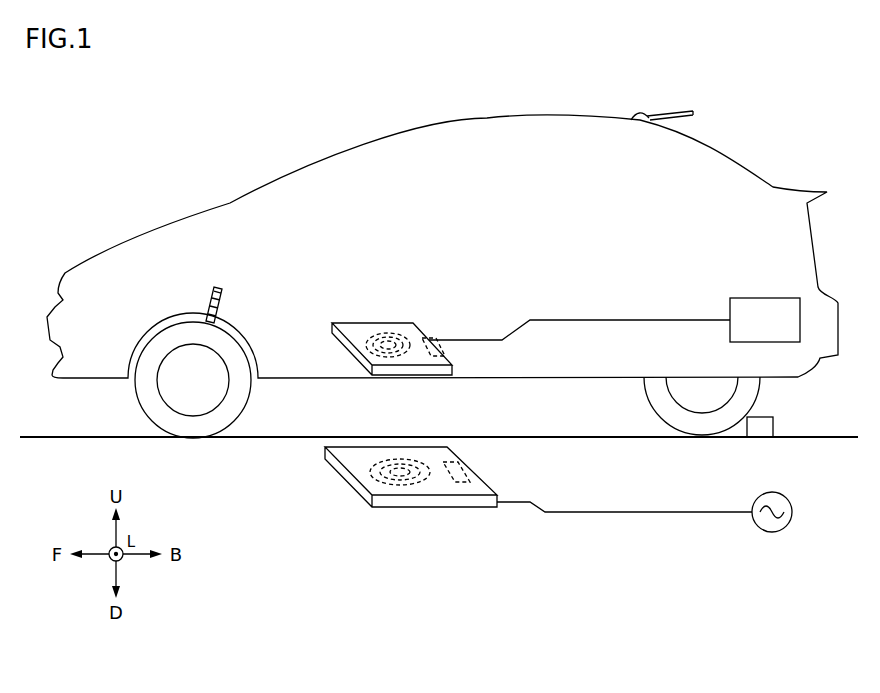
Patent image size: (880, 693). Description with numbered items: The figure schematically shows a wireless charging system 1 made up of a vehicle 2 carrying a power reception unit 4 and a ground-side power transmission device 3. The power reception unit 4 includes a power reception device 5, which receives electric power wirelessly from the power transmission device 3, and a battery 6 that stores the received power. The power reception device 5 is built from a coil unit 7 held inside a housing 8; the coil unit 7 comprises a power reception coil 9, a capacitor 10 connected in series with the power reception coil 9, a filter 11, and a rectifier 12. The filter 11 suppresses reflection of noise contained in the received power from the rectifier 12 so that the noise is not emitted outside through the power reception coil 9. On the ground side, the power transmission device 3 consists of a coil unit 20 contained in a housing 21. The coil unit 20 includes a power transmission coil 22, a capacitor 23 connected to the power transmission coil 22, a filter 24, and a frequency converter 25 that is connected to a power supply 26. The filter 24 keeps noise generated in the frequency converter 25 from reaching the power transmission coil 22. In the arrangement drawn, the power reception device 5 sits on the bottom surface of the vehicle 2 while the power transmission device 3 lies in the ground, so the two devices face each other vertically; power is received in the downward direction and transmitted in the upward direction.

The wireless charging system 1 is at (248, 131).
The vehicle 2 is at (487, 116).
The power transmission device 3 is at (528, 584).
The power reception unit 4 is at (345, 211).
The power reception device 5 is at (300, 246).
The battery 6 is at (767, 298).
The coil unit 7 is at (495, 279).
The housing 8 is at (345, 323).
The power reception coil 9 is at (418, 340).
The capacitor 10 is at (385, 330).
The filter 11 is at (362, 324).
The rectifier 12 is at (442, 345).
The coil unit 20 is at (295, 549).
The housing 21 is at (496, 500).
The power transmission coil 22 is at (407, 482).
The capacitor 23 is at (372, 478).
The filter 24 is at (350, 478).
The frequency converter 25 is at (466, 486).
The power supply 26 is at (773, 533).